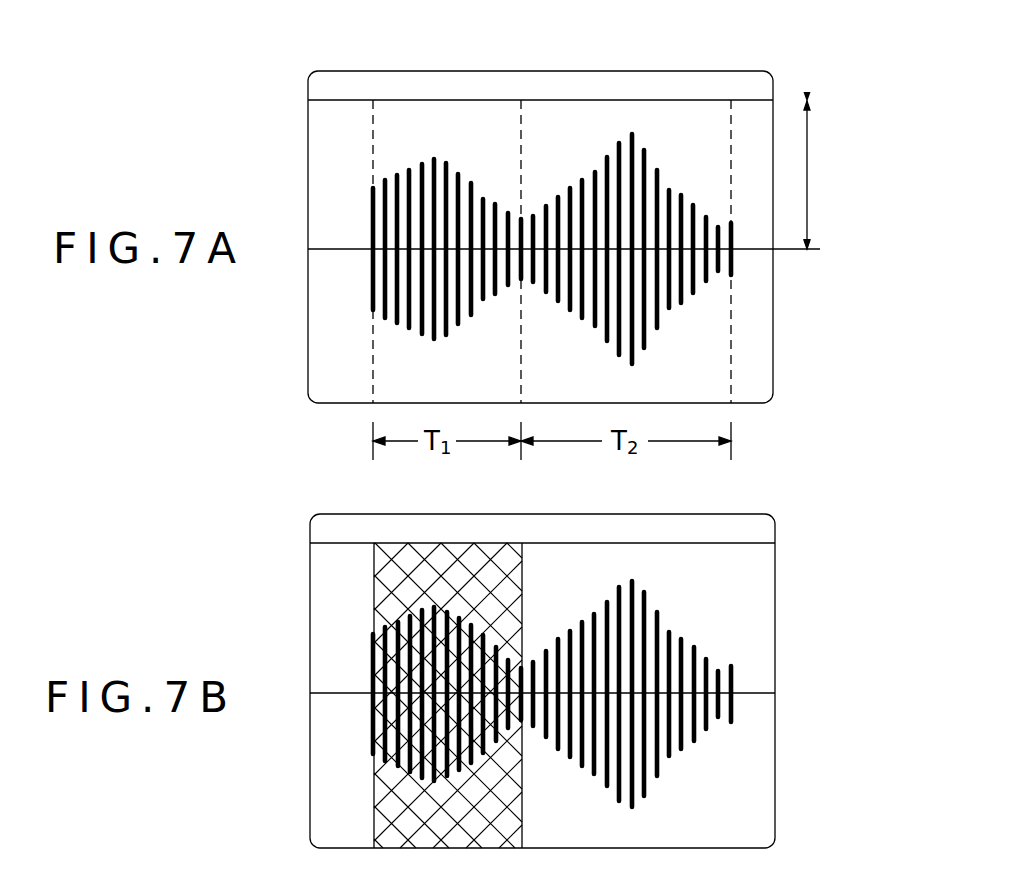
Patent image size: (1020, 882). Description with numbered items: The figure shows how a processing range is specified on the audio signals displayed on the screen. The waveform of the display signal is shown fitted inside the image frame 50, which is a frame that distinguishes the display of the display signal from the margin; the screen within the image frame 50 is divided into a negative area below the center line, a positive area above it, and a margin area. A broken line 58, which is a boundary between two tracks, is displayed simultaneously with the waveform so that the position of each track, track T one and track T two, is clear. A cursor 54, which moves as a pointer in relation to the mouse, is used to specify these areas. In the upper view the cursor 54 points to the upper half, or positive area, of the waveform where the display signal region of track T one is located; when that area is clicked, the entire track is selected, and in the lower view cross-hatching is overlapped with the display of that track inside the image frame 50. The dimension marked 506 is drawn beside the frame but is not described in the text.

In FIG. 7A, the image frame 50 is at (564, 237).
In FIG. 7B, the image frame 50 is at (775, 660).
In FIG. 7A, the cursor 54 is at (486, 144).
In FIG. 7B, the cursor 54 is at (552, 694).
In FIG. 7A, the broken line 58 is at (373, 136).
In FIG. 7B, the broken line 58 is at (448, 695).
In FIG. 7A, the signal amplitude range 506 is at (808, 196).